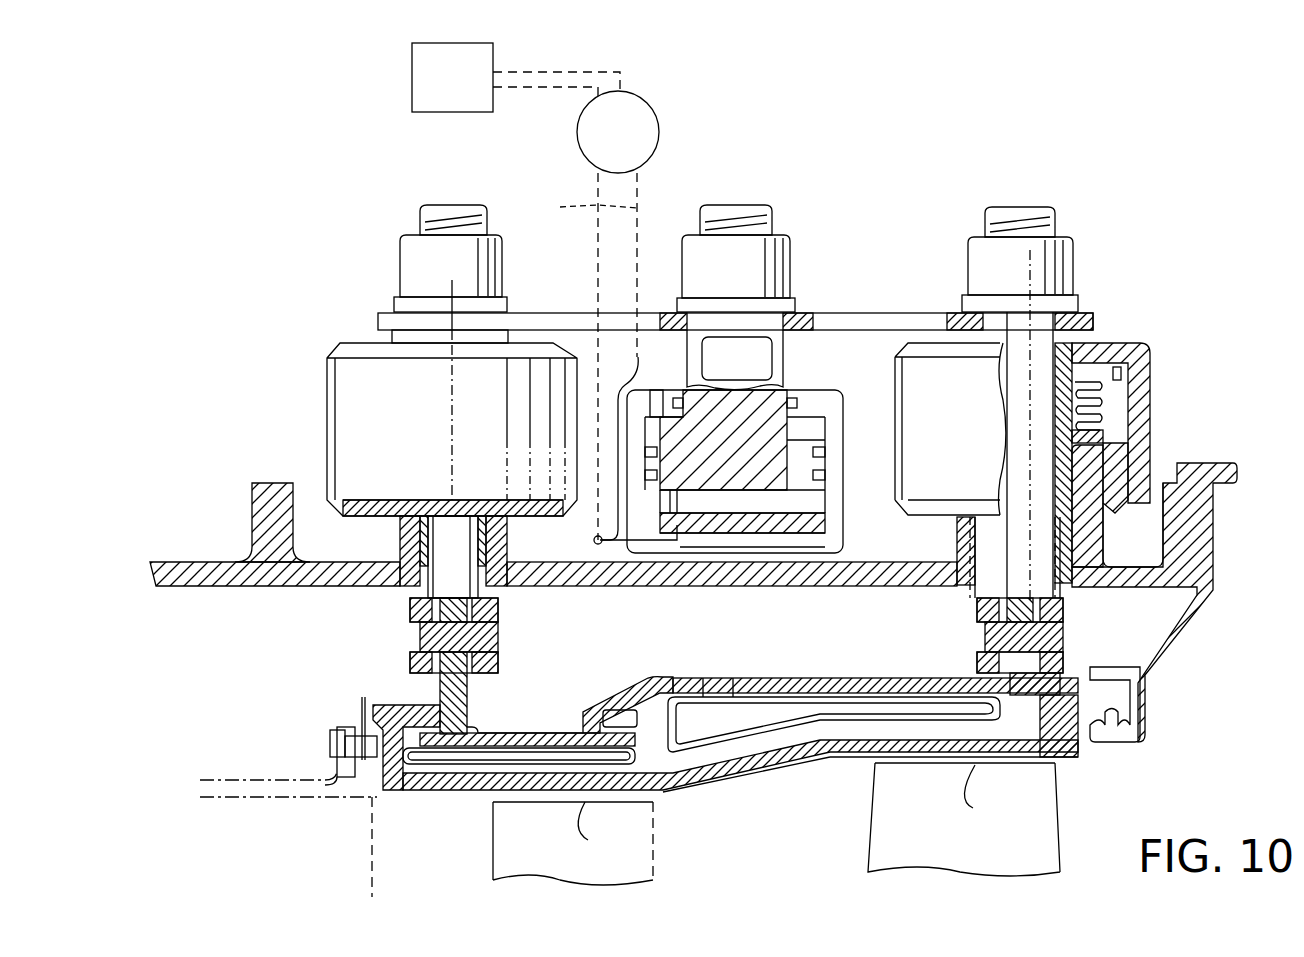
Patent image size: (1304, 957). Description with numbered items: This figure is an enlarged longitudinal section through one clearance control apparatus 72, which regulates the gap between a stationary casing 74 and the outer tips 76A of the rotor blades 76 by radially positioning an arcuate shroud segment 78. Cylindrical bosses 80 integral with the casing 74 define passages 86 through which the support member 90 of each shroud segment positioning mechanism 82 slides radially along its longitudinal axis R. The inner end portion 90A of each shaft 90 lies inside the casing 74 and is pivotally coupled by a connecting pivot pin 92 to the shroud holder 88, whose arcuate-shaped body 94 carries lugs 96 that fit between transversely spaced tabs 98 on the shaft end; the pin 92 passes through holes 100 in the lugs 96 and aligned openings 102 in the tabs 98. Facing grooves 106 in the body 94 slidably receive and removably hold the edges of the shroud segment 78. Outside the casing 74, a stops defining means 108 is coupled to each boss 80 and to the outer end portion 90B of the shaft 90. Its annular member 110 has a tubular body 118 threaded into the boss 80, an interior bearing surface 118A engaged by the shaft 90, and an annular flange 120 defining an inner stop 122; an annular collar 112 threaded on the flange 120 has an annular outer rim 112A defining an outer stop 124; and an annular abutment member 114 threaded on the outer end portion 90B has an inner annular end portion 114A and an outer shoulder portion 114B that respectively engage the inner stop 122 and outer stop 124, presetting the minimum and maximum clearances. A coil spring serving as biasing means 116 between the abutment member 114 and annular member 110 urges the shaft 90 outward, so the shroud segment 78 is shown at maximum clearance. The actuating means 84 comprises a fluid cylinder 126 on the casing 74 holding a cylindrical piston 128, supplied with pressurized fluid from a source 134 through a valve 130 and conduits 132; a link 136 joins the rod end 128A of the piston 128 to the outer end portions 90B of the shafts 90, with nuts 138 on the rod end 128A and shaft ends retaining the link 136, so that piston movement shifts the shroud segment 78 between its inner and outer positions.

The clearance control apparatus 72 is at (1095, 140).
The stationary casing 74 is at (300, 590).
The blades 76 is at (555, 878).
The outer tips 76A is at (535, 810).
The shroud segments 78 is at (740, 792).
The cylindrical bosses 80 is at (856, 550).
The shroud segment positioning mechanism 82 is at (322, 317).
The actuating means 84 is at (790, 285).
The passages 86 is at (472, 540).
The shroud holder 88 is at (763, 678).
The support member 90 is at (432, 525).
The inner end portion 90A is at (500, 657).
The outer end portion 90B is at (1055, 290).
The connecting pivot pin 92 is at (410, 620).
The arcuate-shaped body 94 is at (700, 677).
The lugs 96 is at (460, 707).
The tabs 98 is at (412, 607).
The holes 100 is at (420, 637).
The openings 102 is at (410, 660).
The grooves 106 is at (350, 730).
The stops defining means 108 is at (310, 380).
The annular member 110 is at (398, 540).
The annular collar 112 is at (327, 435).
The annular outer rim 112A is at (1115, 345).
The annular abutment member 114 is at (1125, 300).
The inner annular end portion 114A is at (1070, 405).
The outer shoulder portion 114B is at (1140, 365).
The biasing means 116 is at (1105, 410).
The tubular body 118 is at (488, 565).
The interior bearing surface 118A is at (480, 520).
The annular flange 120 is at (1120, 450).
The inner stop 122 is at (1085, 425).
The outer stop 124 is at (1062, 385).
The fluid cylinder 126 is at (848, 434).
The cylindrical piston 128 is at (760, 456).
The rod end 128A is at (783, 350).
The valve 130 is at (659, 124).
The conduits 132 is at (565, 87).
The source of pressurized fluid 134 is at (466, 112).
The link 136 is at (862, 313).
The nuts 138 is at (400, 253).
The longitudinal axis R is at (452, 380).